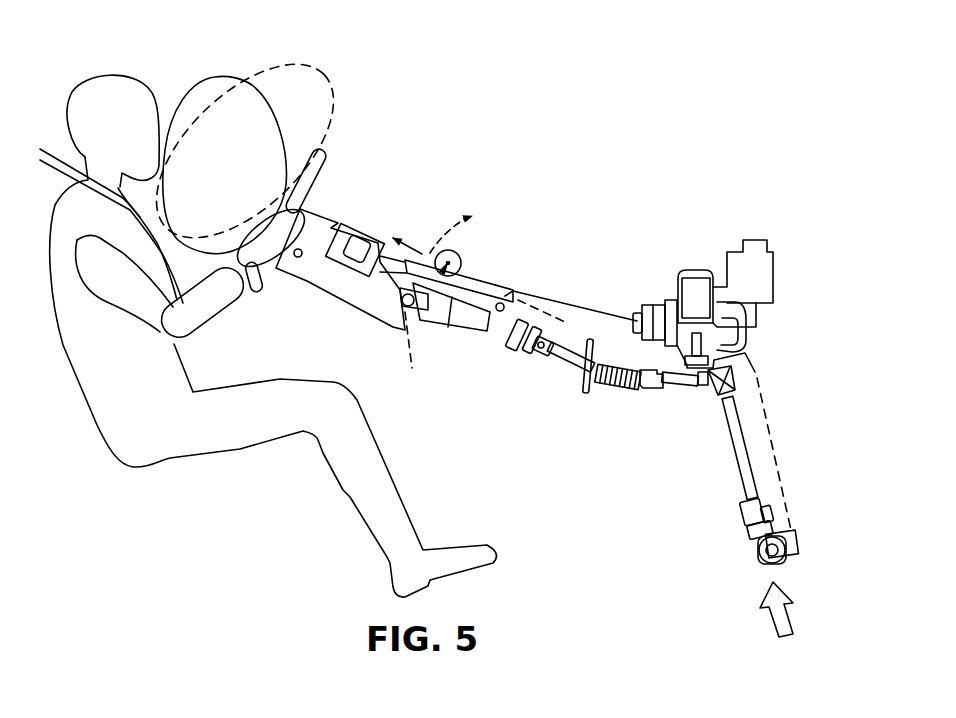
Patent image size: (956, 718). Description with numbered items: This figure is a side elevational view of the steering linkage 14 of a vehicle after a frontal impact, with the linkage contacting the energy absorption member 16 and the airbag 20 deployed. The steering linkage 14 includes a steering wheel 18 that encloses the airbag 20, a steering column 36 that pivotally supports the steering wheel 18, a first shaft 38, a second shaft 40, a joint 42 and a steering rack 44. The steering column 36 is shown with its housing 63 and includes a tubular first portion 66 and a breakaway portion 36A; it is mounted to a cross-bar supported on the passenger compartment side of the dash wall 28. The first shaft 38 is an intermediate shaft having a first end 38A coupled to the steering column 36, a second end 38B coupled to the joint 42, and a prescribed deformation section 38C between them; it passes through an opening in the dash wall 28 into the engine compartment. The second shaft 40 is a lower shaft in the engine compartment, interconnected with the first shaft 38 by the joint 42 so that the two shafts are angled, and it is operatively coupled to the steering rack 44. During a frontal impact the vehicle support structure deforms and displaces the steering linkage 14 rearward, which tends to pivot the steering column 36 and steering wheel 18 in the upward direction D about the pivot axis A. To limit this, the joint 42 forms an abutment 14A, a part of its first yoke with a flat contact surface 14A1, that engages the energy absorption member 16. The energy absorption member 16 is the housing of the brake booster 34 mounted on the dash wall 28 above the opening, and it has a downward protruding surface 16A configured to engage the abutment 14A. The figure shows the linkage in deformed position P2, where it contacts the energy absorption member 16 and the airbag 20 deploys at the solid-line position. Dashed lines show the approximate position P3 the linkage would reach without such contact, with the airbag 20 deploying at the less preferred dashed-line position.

The steering linkage 14 is at (582, 417).
The abutment 14A is at (711, 402).
The contact surface 14A1 is at (722, 370).
The energy absorption member 16 is at (670, 353).
The downward protruding surface 16A is at (743, 328).
The steering wheel 18 is at (328, 177).
The airbag 20 is at (186, 92).
The dash wall 28 is at (572, 387).
The brake booster 34 is at (757, 317).
The steering column 36 is at (417, 316).
The breakaway portion 36A is at (492, 327).
The first shaft 38 is at (674, 388).
The first end 38A is at (553, 357).
The second end 38B is at (693, 393).
The prescribed deformation section 38C is at (611, 386).
The second shaft 40 is at (740, 474).
The joint 42 is at (742, 378).
The steering rack 44 is at (757, 553).
The housing 63 is at (327, 291).
The first portion 66 is at (474, 324).
The pivot axis A is at (460, 256).
The direction D is at (407, 345).
The position P2 is at (752, 586).
The position P3 is at (815, 520).